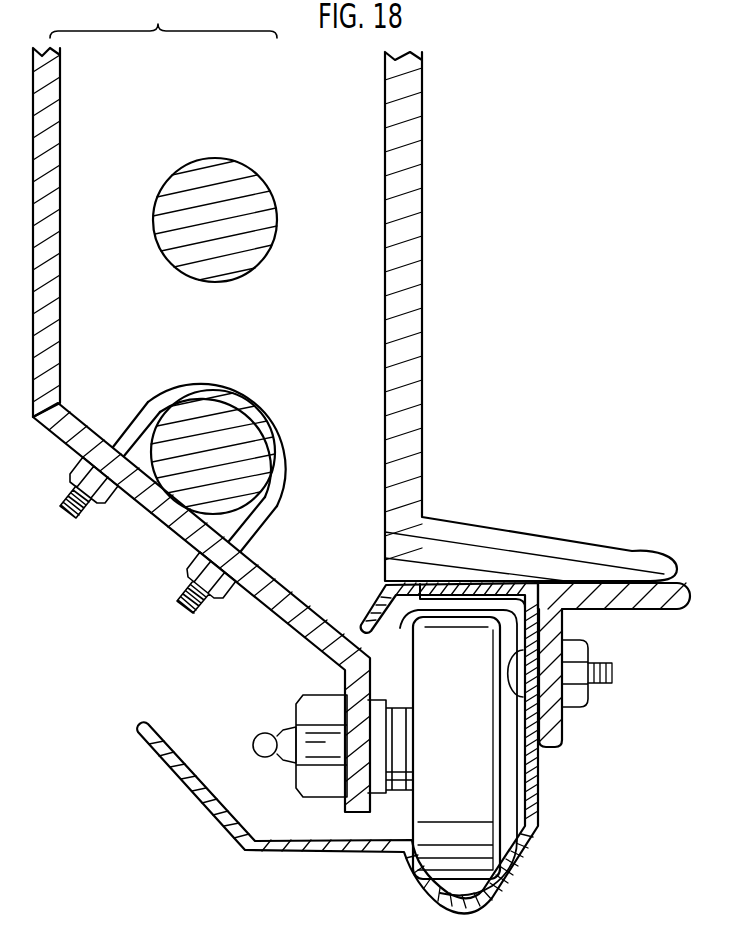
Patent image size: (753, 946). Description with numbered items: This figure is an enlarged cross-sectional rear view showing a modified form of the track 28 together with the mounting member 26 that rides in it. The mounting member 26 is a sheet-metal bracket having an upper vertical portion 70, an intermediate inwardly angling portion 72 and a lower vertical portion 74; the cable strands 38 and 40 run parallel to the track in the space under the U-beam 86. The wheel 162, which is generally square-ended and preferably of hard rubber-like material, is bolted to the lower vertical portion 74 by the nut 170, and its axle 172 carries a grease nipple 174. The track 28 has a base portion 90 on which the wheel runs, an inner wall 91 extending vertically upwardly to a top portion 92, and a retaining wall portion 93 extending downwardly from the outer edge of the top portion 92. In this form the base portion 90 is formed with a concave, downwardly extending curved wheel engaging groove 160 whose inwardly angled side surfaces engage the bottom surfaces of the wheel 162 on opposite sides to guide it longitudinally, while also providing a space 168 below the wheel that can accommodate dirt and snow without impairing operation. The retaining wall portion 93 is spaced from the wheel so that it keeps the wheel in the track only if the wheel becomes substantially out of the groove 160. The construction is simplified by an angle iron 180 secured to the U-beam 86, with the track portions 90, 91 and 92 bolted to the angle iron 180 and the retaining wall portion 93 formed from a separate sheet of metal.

The mounting member 26 is at (69, 82).
The upper vertical portion 70 is at (52, 112).
The cable strand 38 is at (172, 182).
The intermediate inwardly angling portion 72 is at (70, 424).
The cable strand 40 is at (255, 425).
The U-beam 86 is at (410, 434).
The retaining wall portion 93 is at (375, 603).
The top portion 92 is at (400, 612).
The angle iron 180 is at (632, 600).
The lower vertical portion 74 is at (352, 690).
The grease nipple 174 is at (261, 734).
The wheel 162 is at (467, 762).
The nut 170 is at (296, 796).
The axle 172 is at (402, 790).
The inner wall 91 is at (540, 782).
The track 28 is at (384, 745).
The base portion 90 is at (325, 847).
The space 168 is at (440, 888).
The wheel engaging groove 160 is at (482, 898).